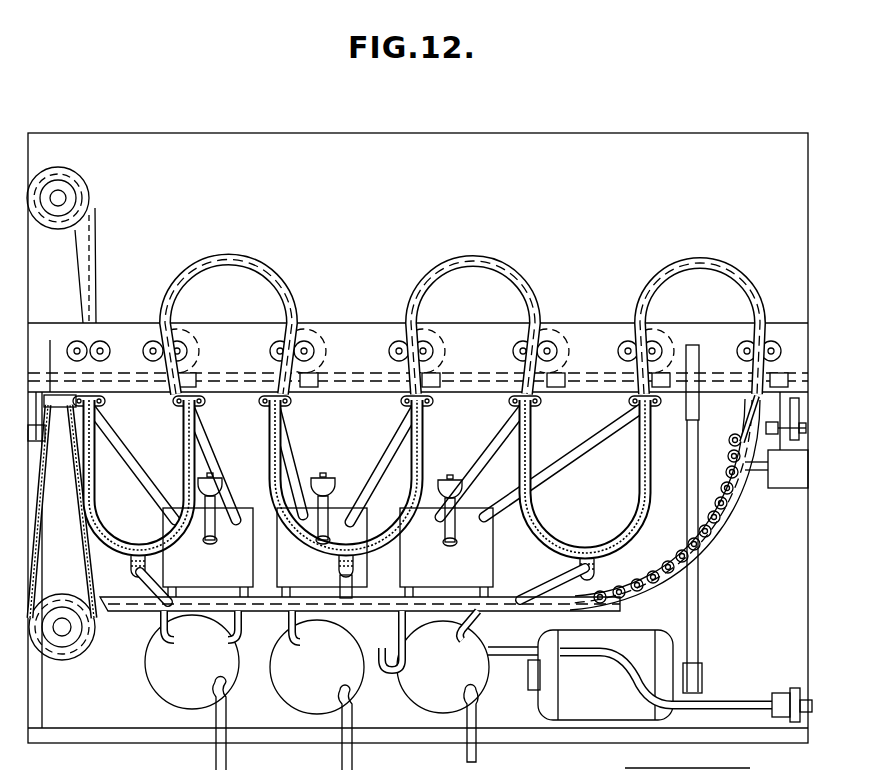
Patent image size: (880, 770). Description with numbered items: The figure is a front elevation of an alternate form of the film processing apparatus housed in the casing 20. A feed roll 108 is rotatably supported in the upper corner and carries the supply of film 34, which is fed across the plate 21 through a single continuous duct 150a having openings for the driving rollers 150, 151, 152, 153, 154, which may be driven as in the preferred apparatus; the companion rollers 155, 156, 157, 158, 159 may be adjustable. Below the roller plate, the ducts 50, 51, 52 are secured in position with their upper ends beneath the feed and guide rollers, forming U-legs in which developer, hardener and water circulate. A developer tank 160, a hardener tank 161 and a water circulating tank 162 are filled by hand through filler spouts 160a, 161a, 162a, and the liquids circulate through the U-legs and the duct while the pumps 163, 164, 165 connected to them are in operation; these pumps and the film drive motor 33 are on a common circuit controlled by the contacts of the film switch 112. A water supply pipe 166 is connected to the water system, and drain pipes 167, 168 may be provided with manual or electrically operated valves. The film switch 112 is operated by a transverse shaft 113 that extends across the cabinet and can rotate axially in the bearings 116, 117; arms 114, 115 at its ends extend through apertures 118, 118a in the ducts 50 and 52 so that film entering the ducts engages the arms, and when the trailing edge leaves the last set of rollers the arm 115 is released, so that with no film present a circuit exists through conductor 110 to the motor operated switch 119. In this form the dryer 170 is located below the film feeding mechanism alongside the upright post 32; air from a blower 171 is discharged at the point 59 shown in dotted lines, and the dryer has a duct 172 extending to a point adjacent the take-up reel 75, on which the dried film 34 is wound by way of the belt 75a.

The casing 20 is at (105, 735).
The conductor 110 is at (640, 768).
The feed roll 108 is at (85, 187).
The film 34 is at (96, 256).
The reel 75 is at (80, 645).
The belt strap 75a is at (84, 578).
The bearing 116 is at (39, 390).
The arm 114 is at (76, 343).
The roller 155 is at (147, 349).
The driving roller 150 is at (188, 351).
The roller 156 is at (271, 349).
The driving roller 151 is at (316, 349).
The roller 157 is at (390, 349).
The driving roller 152 is at (435, 349).
The roller 158 is at (520, 343).
The driving roller 153 is at (559, 349).
The roller 159 is at (620, 356).
The driving roller 154 is at (656, 346).
The arm 115 is at (781, 390).
The continuous duct 150a is at (290, 310).
The plate 21 is at (358, 330).
The aperture 118 is at (96, 402).
The duct 50 is at (139, 501).
The duct 51 is at (380, 525).
The duct 52 is at (588, 552).
The filler spout 160a is at (215, 482).
The filler spout 161a is at (330, 482).
The filler spout 162a is at (462, 487).
The developer tank 160 is at (208, 552).
The hardener tank 161 is at (322, 552).
The water circulating tank 162 is at (446, 552).
The duct 172 is at (112, 612).
The pump 163 is at (192, 660).
The pump 164 is at (317, 662).
The pump 165 is at (460, 662).
The drain pipe 167 is at (226, 750).
The drain pipe 168 is at (350, 752).
The motor operated switch 119 is at (465, 757).
The film drive motor 33 is at (600, 675).
The water supply pipe 166 is at (718, 702).
The film switch 112 is at (742, 425).
The post 32 is at (698, 606).
The dryer 170 is at (712, 548).
The point 59 is at (728, 488).
The aperture 118a is at (752, 400).
The transverse shaft 113 is at (793, 421).
The bearing 117 is at (786, 435).
The blower 171 is at (776, 469).